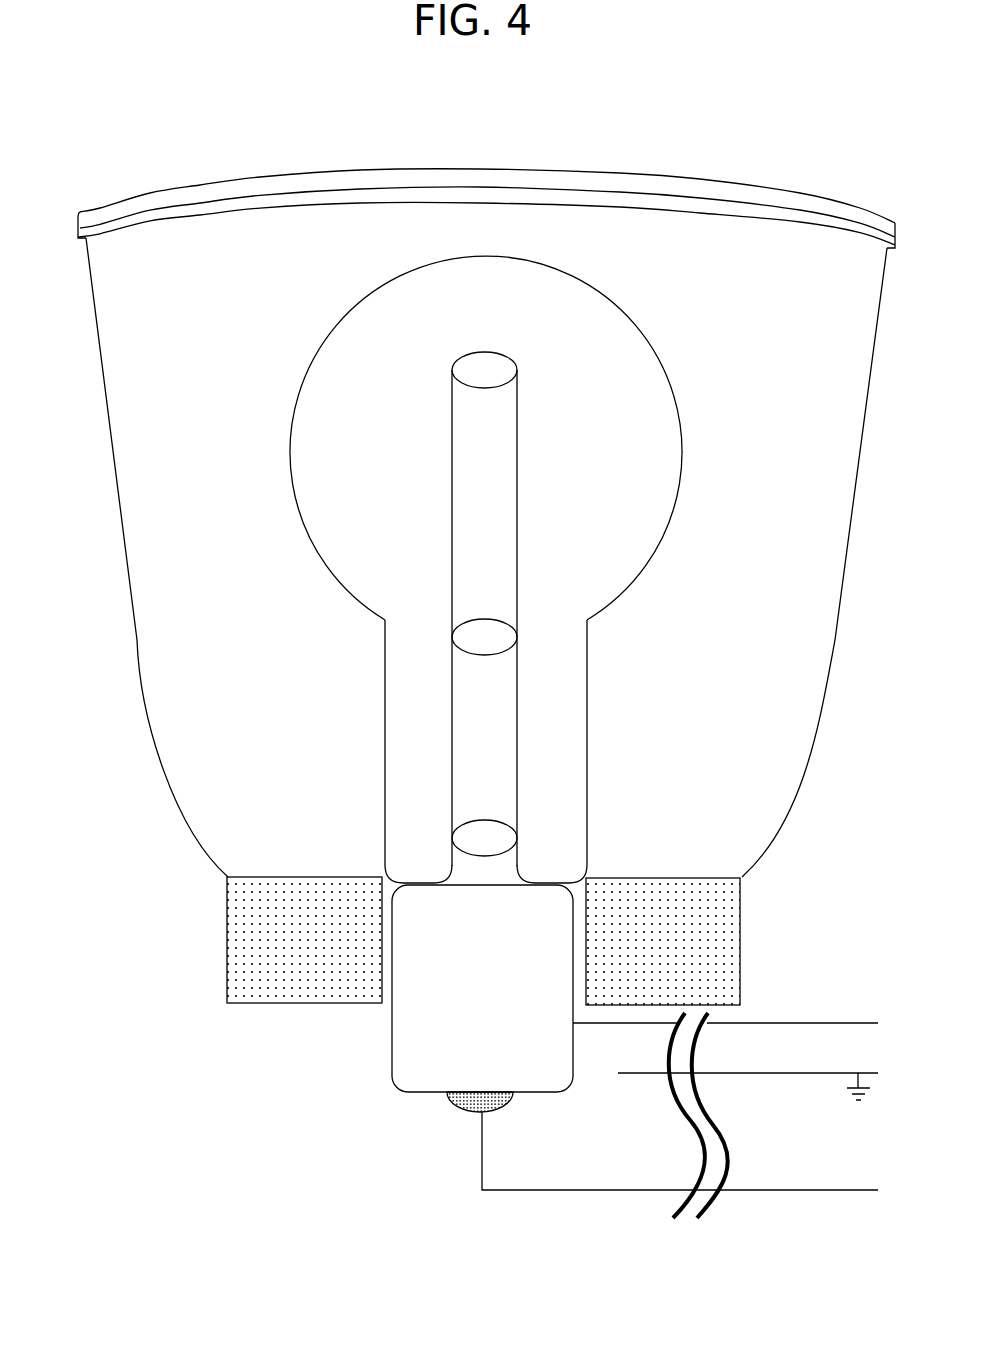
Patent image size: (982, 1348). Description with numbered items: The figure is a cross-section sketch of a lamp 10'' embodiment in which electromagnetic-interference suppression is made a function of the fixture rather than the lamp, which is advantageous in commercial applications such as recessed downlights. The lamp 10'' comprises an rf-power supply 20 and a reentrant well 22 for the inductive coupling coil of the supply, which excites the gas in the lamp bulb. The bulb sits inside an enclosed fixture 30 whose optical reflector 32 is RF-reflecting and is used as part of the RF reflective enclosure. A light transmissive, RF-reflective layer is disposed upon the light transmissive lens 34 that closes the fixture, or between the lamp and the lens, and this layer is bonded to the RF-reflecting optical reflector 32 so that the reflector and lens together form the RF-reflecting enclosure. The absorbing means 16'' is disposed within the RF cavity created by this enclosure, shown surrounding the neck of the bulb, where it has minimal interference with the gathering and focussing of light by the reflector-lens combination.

The light transmissive lens 34 is at (722, 148).
The enclosed fixture 30 is at (142, 690).
The optical reflector 32 is at (810, 760).
The lamp 10'' is at (566, 564).
The reentrant well 22 is at (453, 485).
The rf-power supply 20 is at (465, 998).
The absorbing means 16'' is at (444, 959).